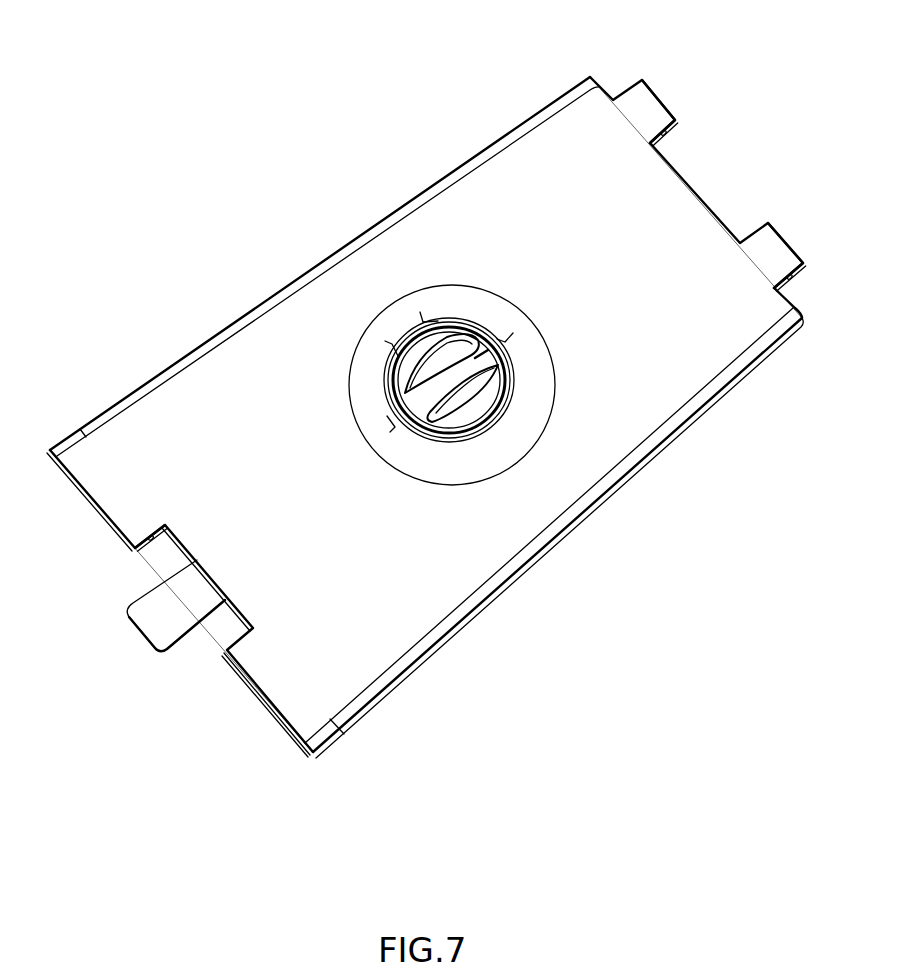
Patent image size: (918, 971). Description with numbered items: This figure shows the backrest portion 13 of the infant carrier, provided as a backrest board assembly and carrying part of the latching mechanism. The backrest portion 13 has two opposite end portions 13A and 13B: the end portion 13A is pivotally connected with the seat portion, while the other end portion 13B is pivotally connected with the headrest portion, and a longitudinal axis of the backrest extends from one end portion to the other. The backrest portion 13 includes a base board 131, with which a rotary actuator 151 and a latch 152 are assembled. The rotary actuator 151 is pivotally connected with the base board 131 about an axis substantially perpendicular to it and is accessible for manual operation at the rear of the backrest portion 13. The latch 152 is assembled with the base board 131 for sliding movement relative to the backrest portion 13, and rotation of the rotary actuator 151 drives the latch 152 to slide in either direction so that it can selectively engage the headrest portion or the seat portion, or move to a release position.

The backrest portion 13 is at (94, 57).
The end portion 13A is at (87, 452).
The end portion 13B is at (632, 93).
The base board 131 is at (305, 367).
The rotary actuator 151 is at (465, 390).
The latch 152 is at (183, 612).